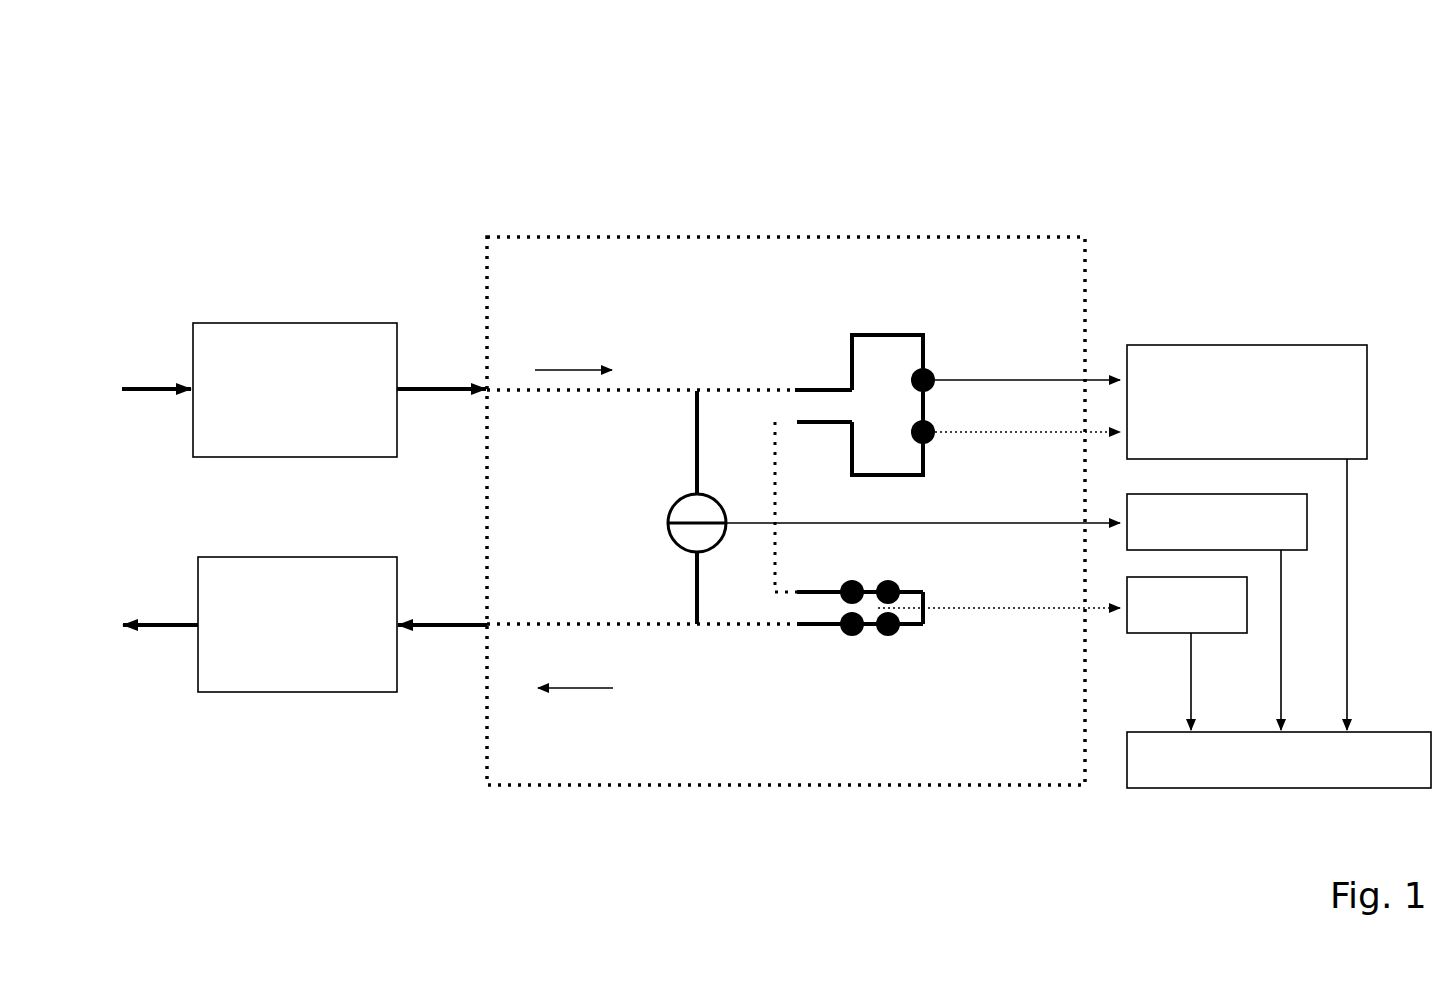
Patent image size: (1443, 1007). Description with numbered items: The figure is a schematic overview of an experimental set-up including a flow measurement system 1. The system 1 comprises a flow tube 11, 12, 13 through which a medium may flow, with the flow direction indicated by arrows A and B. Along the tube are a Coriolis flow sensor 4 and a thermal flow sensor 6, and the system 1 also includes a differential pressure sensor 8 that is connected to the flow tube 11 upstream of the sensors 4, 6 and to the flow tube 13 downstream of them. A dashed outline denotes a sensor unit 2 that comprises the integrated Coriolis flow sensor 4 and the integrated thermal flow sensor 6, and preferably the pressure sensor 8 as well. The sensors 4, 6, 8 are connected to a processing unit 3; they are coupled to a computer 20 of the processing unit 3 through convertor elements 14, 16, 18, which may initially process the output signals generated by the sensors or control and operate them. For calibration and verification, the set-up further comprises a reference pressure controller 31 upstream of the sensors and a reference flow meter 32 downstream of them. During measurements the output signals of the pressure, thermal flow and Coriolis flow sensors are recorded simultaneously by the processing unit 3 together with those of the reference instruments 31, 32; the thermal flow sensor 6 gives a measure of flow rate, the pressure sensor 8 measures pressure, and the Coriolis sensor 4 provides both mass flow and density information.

The flow measurement system 1 is at (372, 204).
The sensor unit 2 is at (995, 237).
The processing unit 3 is at (1307, 294).
The Coriolis flow sensor 4 is at (880, 335).
The thermal flow sensor 6 is at (888, 634).
The differential pressure sensor 8 is at (678, 546).
The flow tube 11 is at (660, 388).
The flow tube 12 is at (775, 478).
The flow tube 13 is at (752, 625).
The convertor element 14 is at (1247, 537).
The convertor element 16 is at (1187, 653).
The convertor element 18 is at (1217, 612).
The computer 20 is at (1279, 760).
The reference pressure controller 31 is at (304, 390).
The reference flow meter 32 is at (305, 624).